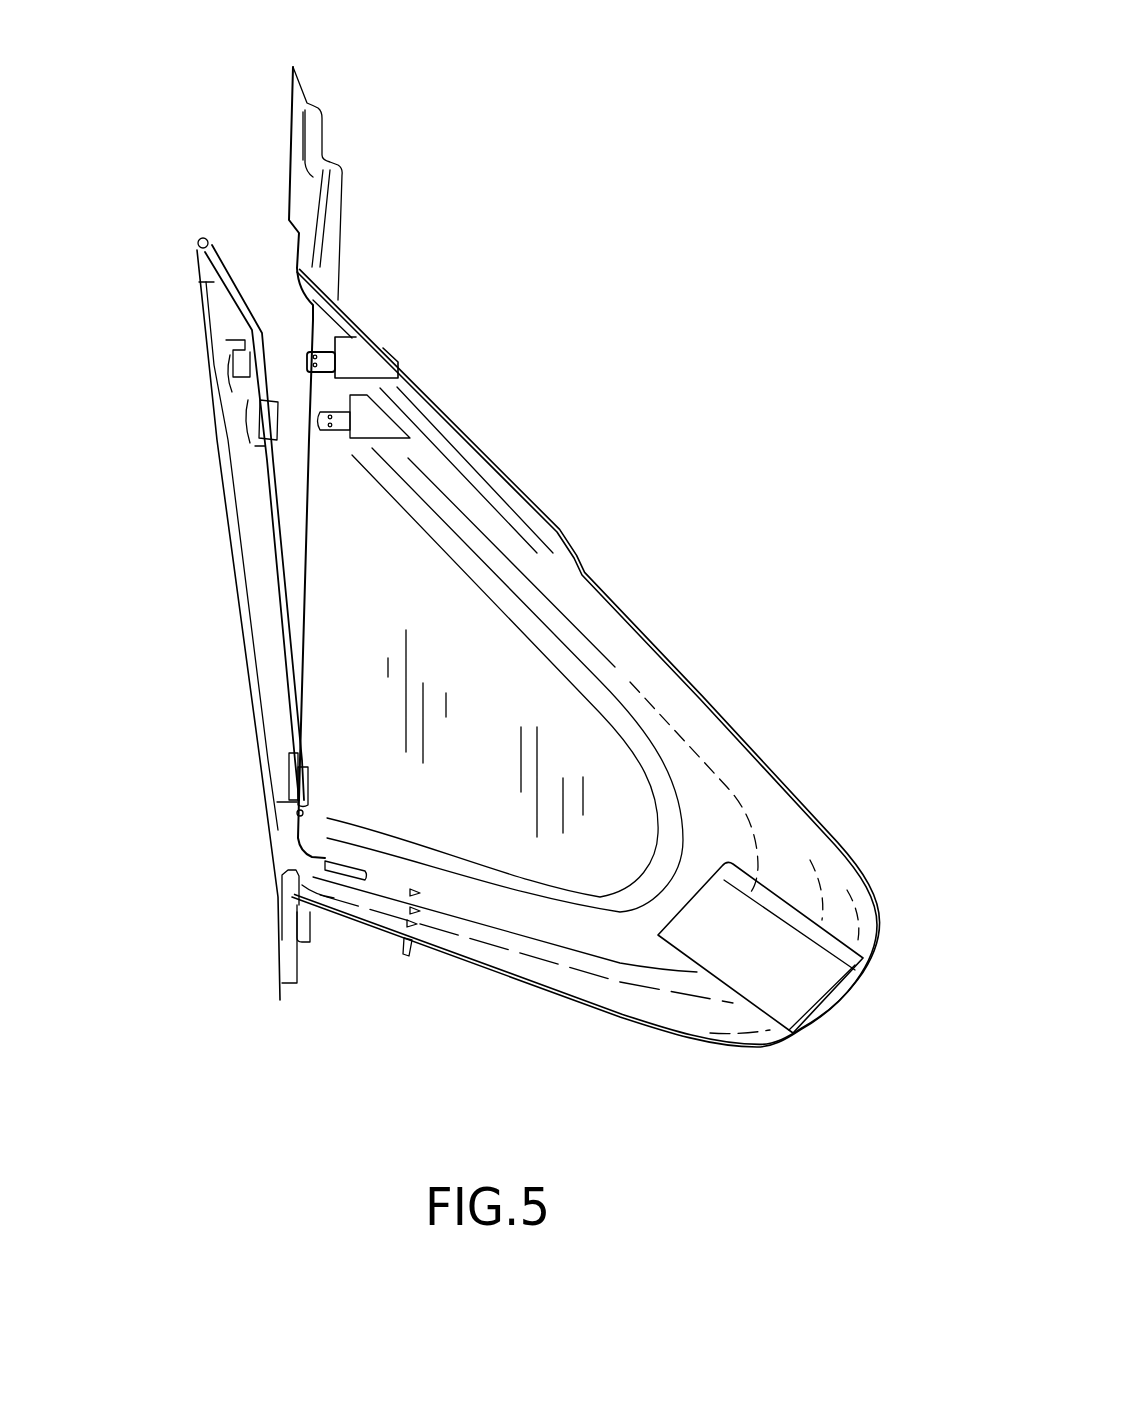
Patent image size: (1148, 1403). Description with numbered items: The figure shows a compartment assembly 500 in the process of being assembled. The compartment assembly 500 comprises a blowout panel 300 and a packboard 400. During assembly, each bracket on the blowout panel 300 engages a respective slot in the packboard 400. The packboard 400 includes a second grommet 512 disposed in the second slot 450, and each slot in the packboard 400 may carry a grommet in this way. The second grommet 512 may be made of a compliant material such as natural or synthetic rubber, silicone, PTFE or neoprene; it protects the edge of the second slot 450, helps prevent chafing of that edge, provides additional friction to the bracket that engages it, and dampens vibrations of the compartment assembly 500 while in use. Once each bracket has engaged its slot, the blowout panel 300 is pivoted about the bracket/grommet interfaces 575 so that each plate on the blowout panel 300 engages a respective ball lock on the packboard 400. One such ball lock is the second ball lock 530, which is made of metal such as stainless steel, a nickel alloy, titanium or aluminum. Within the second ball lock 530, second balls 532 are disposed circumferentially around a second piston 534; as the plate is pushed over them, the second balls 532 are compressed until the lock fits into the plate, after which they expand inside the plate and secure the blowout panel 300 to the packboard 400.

The compartment assembly 500 is at (203, 104).
The blowout panel 300 is at (228, 520).
The packboard 400 is at (576, 575).
The second ball lock 530 is at (343, 358).
The second piston 534 is at (336, 360).
The second balls 532 is at (308, 361).
The bracket/grommet interfaces 575 is at (326, 860).
The second slot 450 is at (374, 925).
The second grommet 512 is at (356, 921).